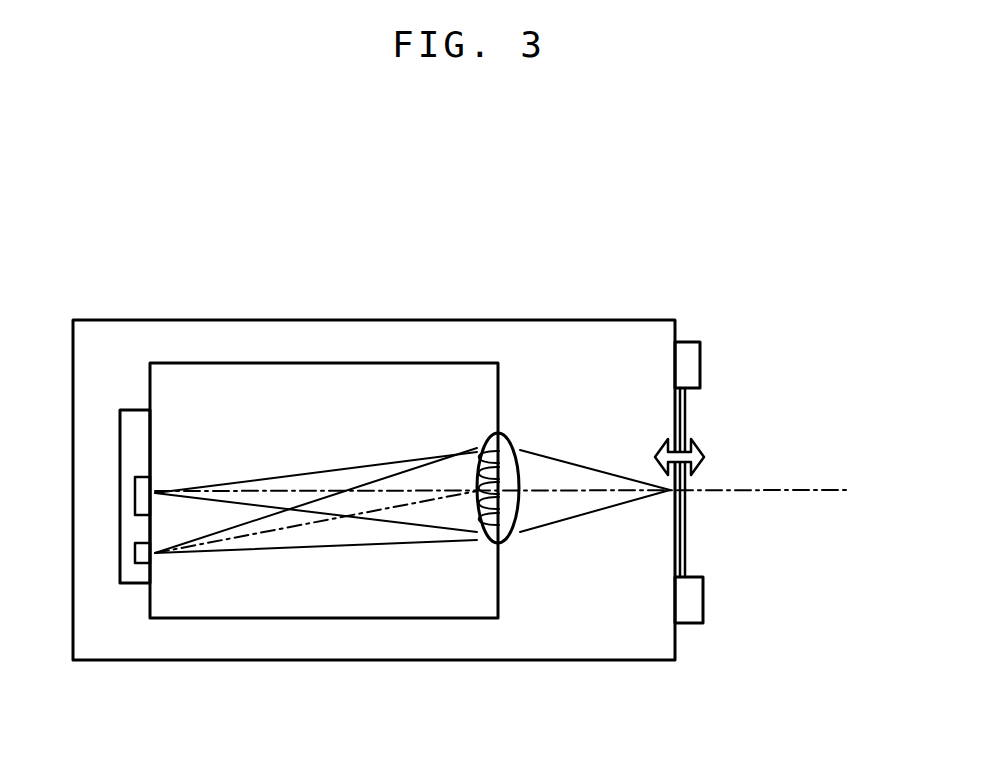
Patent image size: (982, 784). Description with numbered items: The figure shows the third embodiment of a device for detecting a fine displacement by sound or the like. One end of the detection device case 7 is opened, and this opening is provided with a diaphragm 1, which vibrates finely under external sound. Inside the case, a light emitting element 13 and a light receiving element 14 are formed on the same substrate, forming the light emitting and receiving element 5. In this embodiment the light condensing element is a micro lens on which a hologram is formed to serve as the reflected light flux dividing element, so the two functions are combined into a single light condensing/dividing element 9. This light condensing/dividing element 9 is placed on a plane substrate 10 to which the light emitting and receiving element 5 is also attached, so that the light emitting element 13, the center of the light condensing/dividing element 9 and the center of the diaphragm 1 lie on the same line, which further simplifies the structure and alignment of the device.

The diaphragm 1 is at (683, 415).
The light emitting and receiving element 5 is at (137, 422).
The detection device case 7 is at (403, 662).
The light condensing/dividing element 9 is at (523, 460).
The plane substrate 10 is at (273, 618).
The light emitting element 13 is at (152, 490).
The light receiving element 14 is at (143, 563).